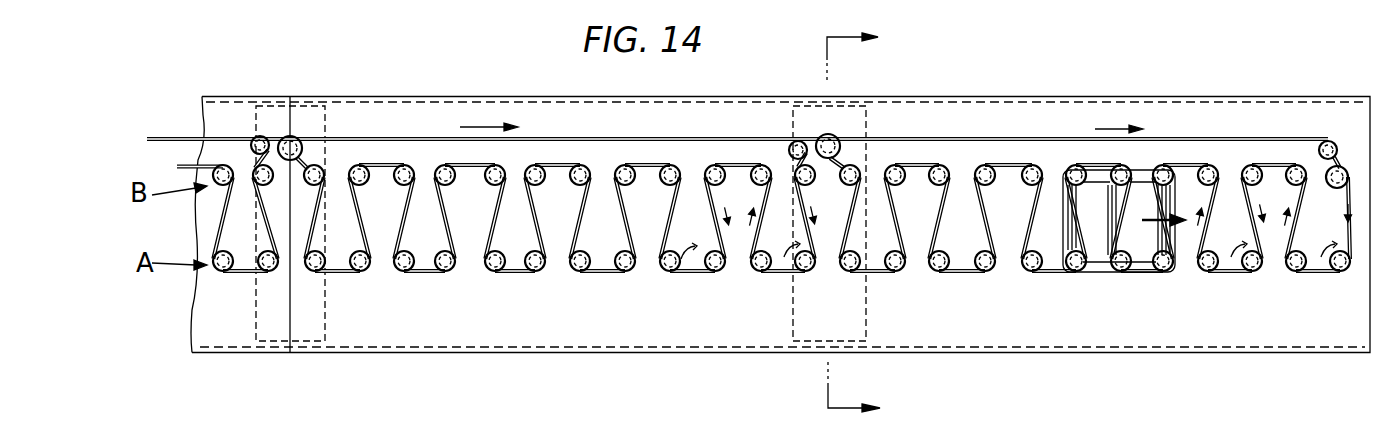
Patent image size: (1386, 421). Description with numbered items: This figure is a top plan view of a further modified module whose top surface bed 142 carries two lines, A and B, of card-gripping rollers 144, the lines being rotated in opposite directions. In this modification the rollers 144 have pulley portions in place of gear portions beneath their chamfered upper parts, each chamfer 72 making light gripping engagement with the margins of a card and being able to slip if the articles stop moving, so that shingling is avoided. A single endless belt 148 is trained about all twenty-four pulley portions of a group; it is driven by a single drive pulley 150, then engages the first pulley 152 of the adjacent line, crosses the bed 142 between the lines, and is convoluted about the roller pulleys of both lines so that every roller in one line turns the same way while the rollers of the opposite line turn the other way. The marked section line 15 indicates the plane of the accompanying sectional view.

The top surface bed 142 is at (366, 336).
The card-gripping rollers 144 is at (626, 168).
The endless belt 148 is at (236, 272).
The drive pulley 150 is at (293, 140).
The first pulley 152 is at (320, 170).
The chamfer 72 is at (1138, 242).
The section line 15- 15 is at (874, 220).